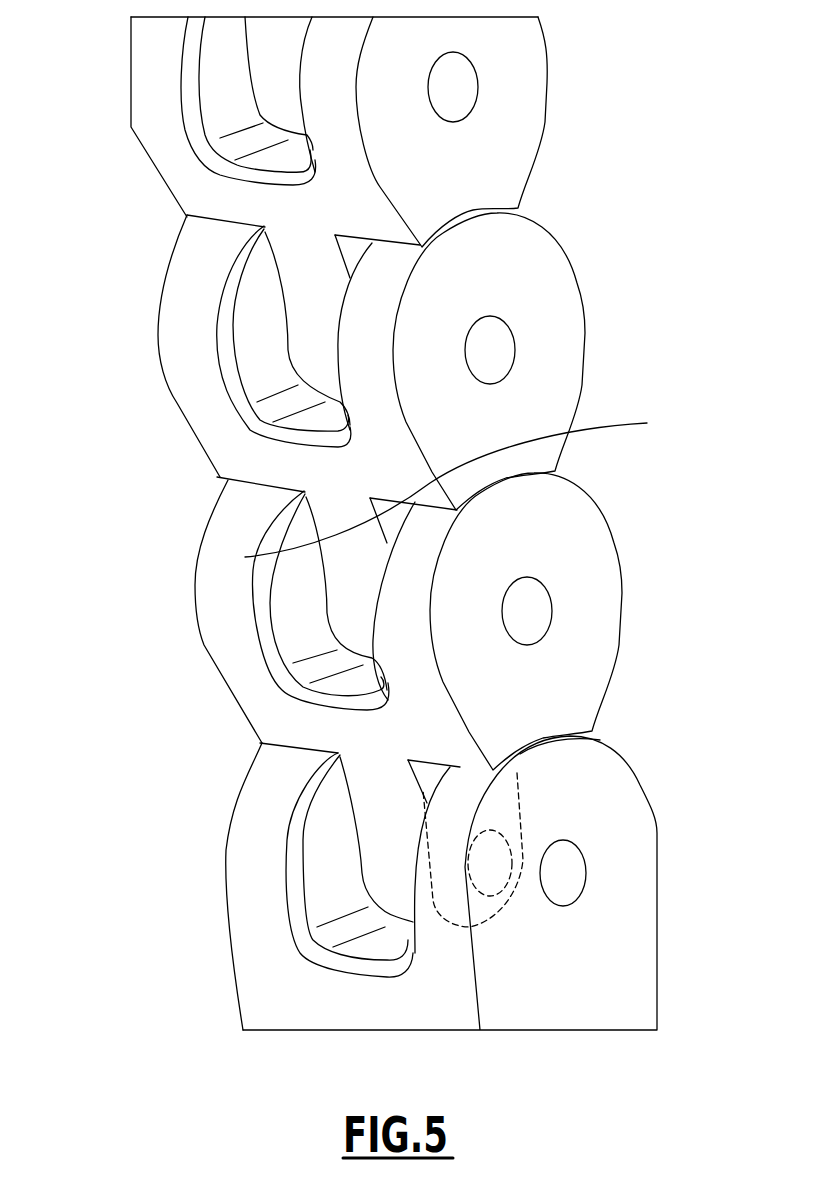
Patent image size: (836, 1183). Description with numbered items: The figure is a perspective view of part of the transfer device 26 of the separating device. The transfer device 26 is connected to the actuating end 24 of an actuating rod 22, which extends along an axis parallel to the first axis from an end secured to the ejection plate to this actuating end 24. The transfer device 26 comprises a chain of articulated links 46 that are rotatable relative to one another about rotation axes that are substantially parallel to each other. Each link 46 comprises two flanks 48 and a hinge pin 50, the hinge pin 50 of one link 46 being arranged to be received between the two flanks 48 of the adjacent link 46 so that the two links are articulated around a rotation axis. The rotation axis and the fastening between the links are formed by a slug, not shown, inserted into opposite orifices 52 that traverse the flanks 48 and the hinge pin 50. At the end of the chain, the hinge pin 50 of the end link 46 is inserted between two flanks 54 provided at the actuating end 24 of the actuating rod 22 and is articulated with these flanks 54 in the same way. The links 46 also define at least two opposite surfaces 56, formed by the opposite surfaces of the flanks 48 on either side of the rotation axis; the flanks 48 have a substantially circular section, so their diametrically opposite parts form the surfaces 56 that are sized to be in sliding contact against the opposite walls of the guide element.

The actuating rod 22 is at (583, 967).
The actuating end 24 is at (570, 818).
The transfer device 26 is at (558, 283).
The articulated link 46 is at (500, 108).
The flank 48 is at (537, 510).
The hinge pin 50 is at (393, 827).
The orifice 52 is at (343, 595).
The flank 54 is at (267, 808).
The opposite surface 56 is at (192, 326).